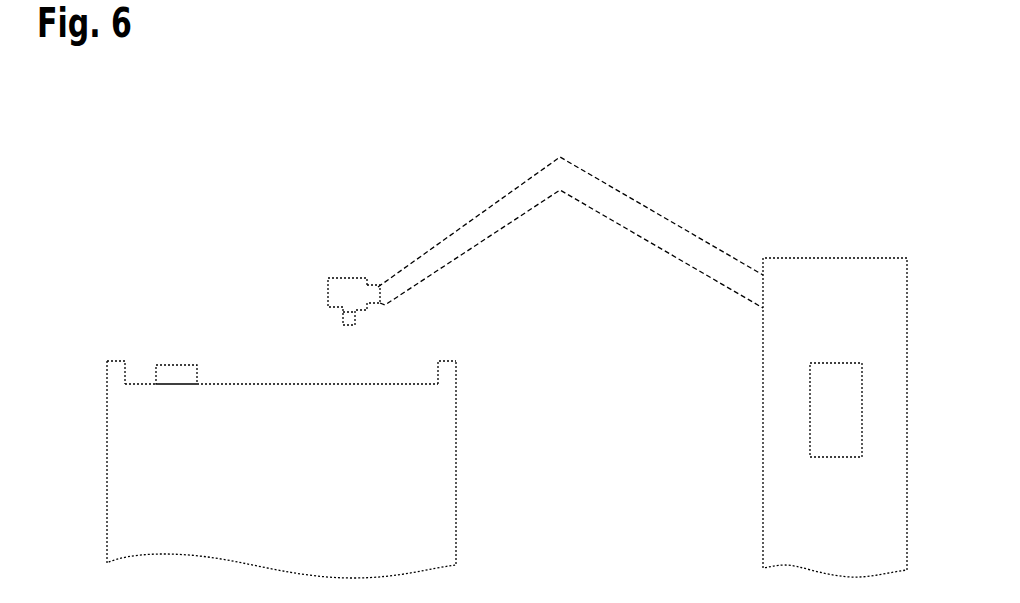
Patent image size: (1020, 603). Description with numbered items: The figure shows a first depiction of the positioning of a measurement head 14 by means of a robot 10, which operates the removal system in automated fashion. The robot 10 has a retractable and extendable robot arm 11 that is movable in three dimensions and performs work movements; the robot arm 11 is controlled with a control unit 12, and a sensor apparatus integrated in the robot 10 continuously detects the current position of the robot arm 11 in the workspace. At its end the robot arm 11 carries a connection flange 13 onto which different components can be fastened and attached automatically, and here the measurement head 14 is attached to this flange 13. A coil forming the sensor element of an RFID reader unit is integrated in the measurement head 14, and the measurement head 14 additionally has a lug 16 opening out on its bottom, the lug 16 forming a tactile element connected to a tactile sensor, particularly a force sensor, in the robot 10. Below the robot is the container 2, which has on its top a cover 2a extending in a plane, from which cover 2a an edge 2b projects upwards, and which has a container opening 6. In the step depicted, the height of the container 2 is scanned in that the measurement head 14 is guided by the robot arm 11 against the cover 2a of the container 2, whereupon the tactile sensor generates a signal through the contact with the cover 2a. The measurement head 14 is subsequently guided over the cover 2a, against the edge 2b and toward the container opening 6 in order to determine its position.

The container 2 is at (470, 468).
The cover 2a is at (364, 385).
The edge 2b is at (118, 377).
The container opening 6 is at (176, 376).
The robot 10 is at (838, 307).
The robot arm 11 is at (660, 212).
The control unit 12 is at (818, 416).
The connection flange 13 is at (372, 288).
The measurement head 14 is at (345, 277).
The lug 16 is at (343, 315).